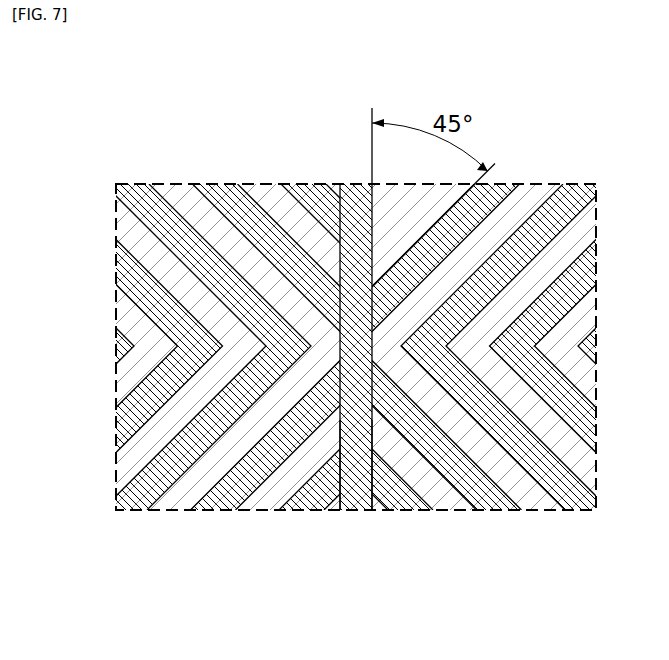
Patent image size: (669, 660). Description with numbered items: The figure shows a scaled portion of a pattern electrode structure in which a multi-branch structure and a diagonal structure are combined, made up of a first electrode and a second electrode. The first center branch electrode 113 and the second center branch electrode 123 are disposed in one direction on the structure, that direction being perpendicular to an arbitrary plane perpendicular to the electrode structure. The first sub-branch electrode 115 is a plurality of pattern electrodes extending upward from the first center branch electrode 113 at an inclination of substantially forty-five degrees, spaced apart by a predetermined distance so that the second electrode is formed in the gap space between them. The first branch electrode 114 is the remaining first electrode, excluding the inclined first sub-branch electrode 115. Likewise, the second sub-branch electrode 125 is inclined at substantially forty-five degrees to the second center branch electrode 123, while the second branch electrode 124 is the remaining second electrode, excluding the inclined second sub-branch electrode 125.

The first center branch electrode 113 is at (357, 215).
The first branch electrode 114 is at (198, 250).
The first sub-branch electrode 115 is at (495, 195).
The second center branch electrode 123 is at (358, 473).
The second branch electrode 124 is at (505, 473).
The second sub-branch electrode 125 is at (428, 483).